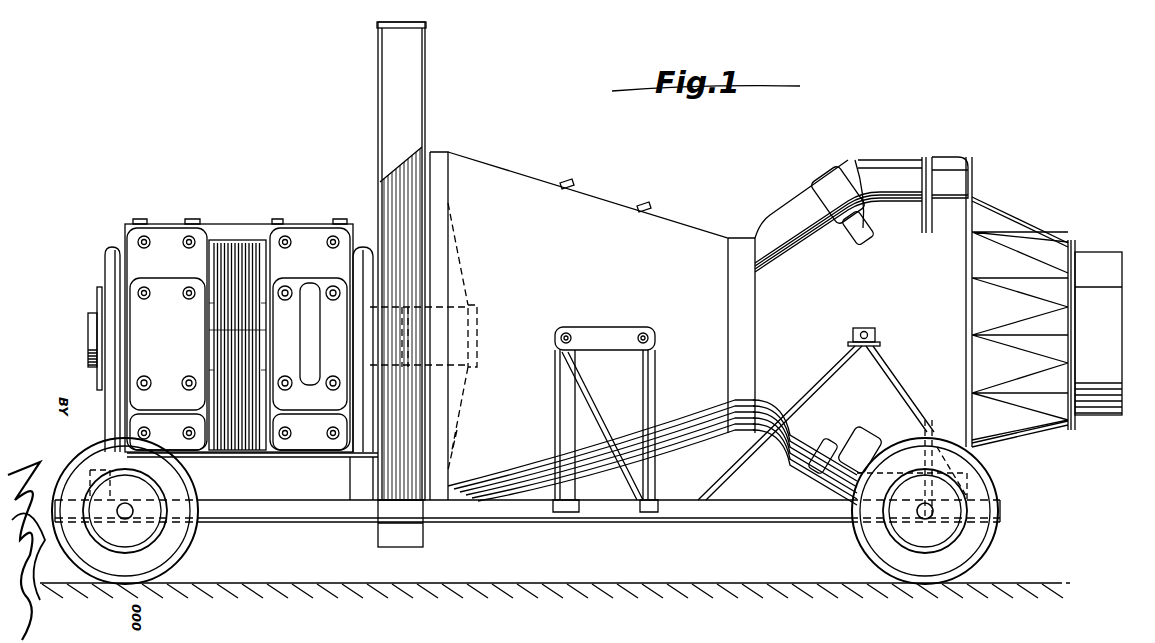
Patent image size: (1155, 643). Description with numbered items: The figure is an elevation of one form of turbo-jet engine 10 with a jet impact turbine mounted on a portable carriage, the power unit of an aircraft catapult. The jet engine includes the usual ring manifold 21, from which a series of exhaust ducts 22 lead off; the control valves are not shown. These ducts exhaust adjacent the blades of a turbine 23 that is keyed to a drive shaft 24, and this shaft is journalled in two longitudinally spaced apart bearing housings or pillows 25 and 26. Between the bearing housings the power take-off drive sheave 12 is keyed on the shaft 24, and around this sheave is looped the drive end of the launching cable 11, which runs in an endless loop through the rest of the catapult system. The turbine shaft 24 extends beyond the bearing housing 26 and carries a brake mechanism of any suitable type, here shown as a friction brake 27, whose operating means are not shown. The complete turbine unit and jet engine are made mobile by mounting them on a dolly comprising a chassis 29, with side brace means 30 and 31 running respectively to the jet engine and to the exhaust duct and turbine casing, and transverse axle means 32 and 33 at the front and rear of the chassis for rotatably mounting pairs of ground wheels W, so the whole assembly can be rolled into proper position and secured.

The turbo-jet engine 10 is at (426, 152).
The launching cable 11 is at (242, 248).
The power take-off drive sheave 12 is at (220, 250).
The ring manifold 21 is at (958, 160).
The exhaust duct 22 is at (838, 197).
The turbine 23 is at (448, 203).
The drive shaft 24 is at (478, 336).
The bearing housing 25 is at (308, 235).
The bearing housing 26 is at (157, 232).
The friction brake 27 is at (97, 293).
The chassis 29 is at (312, 519).
The side brace means 30 is at (828, 378).
The side brace means 31 is at (655, 378).
The transverse axle means 32 is at (932, 512).
The transverse axle means 33 is at (128, 508).
The ground wheels W is at (198, 542).